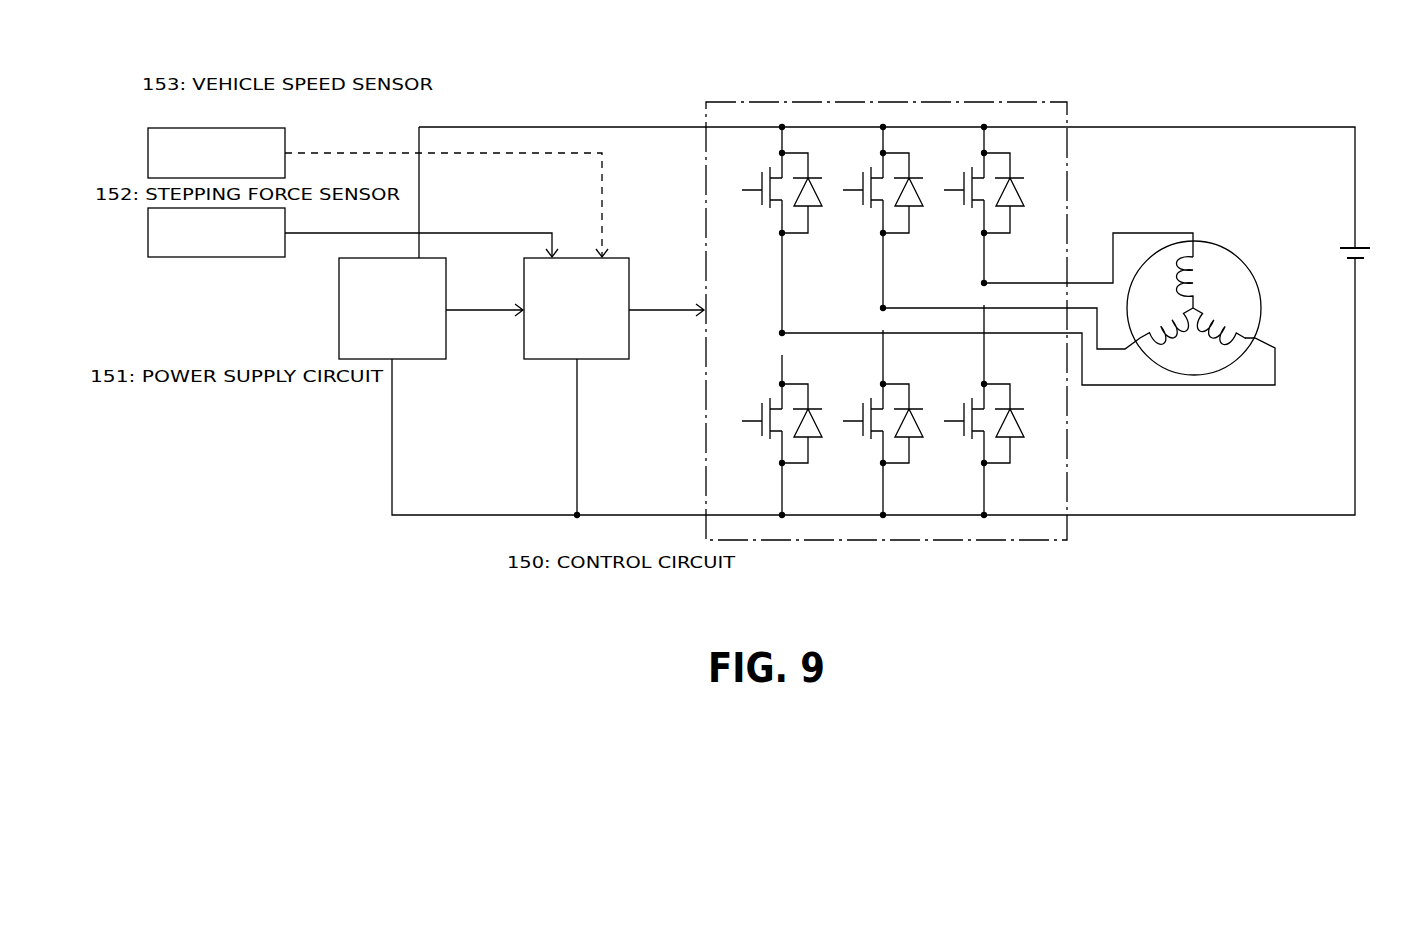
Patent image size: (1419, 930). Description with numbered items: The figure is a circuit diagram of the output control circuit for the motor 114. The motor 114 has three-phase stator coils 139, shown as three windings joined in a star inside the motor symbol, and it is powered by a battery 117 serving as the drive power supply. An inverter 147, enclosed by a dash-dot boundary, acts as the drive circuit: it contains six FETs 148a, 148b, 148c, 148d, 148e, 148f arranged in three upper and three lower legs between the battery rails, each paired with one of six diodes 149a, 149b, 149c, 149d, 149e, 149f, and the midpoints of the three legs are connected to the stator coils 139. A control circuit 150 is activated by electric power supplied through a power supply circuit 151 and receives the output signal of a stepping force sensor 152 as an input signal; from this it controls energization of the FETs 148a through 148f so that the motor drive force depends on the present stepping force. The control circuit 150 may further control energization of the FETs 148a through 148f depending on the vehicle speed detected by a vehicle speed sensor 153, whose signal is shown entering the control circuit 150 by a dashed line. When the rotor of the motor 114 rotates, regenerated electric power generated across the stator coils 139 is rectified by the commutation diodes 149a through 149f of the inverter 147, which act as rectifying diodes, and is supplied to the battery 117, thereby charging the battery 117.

The motor 114 is at (1225, 249).
The battery 117 is at (1363, 245).
The three-phase stator coils 139 is at (1232, 310).
The inverter 147 is at (1037, 103).
The FET 148a is at (757, 186).
The FET 148b is at (757, 420).
The FET 148c is at (858, 186).
The FET 148d is at (858, 420).
The FET 148e is at (959, 186).
The FET 148f is at (959, 420).
The diode 149a is at (815, 212).
The diode 149b is at (815, 448).
The diode 149c is at (916, 212).
The diode 149d is at (916, 448).
The diode 149e is at (1017, 212).
The diode 149f is at (1017, 448).
The control circuit 150 is at (608, 360).
The power supply circuit 151 is at (418, 360).
The stepping force sensor 152 is at (240, 257).
The vehicle speed sensor 153 is at (240, 128).